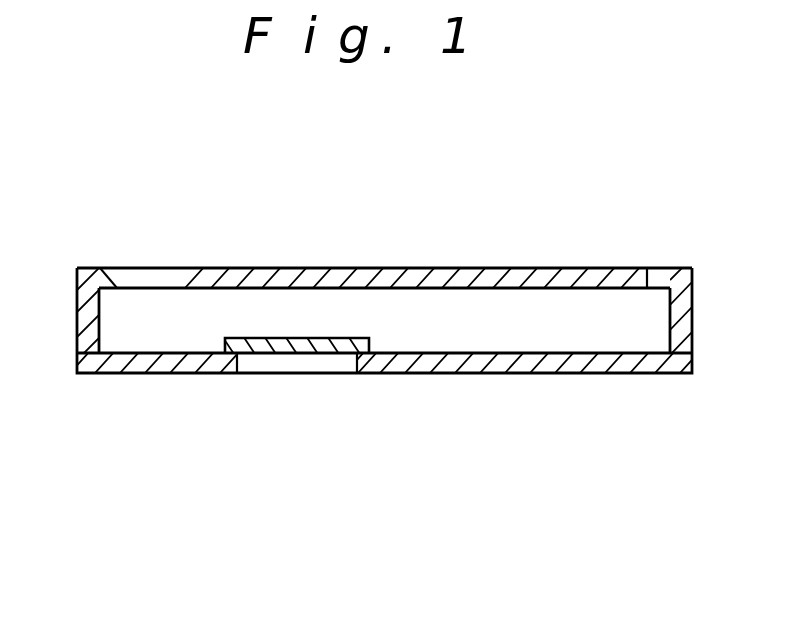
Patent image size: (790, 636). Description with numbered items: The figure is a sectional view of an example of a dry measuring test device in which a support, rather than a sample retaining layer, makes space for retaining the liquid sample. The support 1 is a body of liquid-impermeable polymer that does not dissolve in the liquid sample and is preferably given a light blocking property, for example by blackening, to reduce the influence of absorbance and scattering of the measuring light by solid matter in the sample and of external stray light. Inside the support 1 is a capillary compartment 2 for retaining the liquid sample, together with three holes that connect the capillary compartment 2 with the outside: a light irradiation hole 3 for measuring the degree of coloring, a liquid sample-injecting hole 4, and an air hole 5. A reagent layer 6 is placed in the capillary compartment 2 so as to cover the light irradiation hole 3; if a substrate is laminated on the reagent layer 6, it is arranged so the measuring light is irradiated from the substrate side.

The support 1 is at (467, 275).
The capillary compartment 2 is at (551, 332).
The light irradiation hole 3 is at (257, 365).
The liquid sample-injecting hole 4 is at (151, 272).
The air hole 5 is at (657, 275).
The reagent layer 6 is at (323, 345).